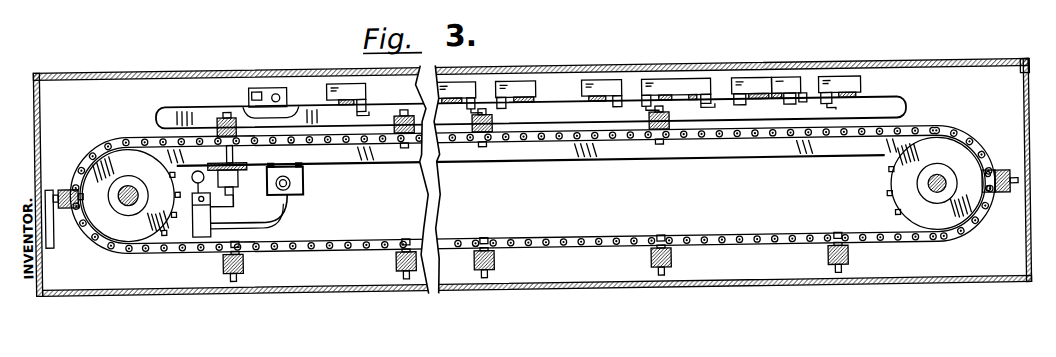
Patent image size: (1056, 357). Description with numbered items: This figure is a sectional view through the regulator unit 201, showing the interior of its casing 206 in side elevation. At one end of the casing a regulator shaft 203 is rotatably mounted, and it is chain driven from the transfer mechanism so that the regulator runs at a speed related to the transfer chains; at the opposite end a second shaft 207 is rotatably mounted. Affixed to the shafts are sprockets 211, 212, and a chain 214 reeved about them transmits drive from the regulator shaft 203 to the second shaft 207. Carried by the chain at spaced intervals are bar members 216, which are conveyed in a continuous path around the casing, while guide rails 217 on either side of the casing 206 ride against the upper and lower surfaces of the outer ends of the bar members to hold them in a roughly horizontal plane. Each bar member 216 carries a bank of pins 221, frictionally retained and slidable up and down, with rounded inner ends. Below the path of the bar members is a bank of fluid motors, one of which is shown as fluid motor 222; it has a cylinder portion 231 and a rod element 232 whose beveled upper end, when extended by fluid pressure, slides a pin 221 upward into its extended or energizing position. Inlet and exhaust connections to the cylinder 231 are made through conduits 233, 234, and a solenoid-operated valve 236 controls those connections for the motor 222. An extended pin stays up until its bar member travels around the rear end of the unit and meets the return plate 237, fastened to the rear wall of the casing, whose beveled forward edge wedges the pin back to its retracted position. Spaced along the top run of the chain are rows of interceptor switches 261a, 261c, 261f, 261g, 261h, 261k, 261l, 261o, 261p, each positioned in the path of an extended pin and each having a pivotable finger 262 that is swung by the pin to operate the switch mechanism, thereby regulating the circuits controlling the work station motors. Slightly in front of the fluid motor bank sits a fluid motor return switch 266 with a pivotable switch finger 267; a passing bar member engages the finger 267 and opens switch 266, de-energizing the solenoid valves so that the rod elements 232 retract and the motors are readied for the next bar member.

The regulator unit 201 is at (109, 70).
The regulator shaft 203 is at (957, 164).
The casing 206 is at (110, 287).
The second shaft 207 is at (132, 204).
The sprocket 211 is at (168, 229).
The sprocket 212 is at (893, 201).
The chain 214 is at (955, 133).
The bar member 216 is at (68, 167).
The guide rail 217 is at (161, 111).
The pin 221 is at (408, 146).
The fluid motor 222 is at (276, 214).
The cylinder portion 231 is at (221, 188).
The rod element 232 is at (234, 153).
The conduit 233 is at (211, 207).
The conduit 234 is at (177, 182).
The solenoid-operated valve 236 is at (212, 228).
The return plate 237 is at (62, 236).
The interceptor switch 261a is at (352, 75).
The interceptor switch 261c is at (462, 87).
The interceptor switch 261f is at (525, 85).
The interceptor switch 261g is at (597, 89).
The interceptor switch 261h is at (670, 90).
The interceptor switch 261k is at (705, 88).
The interceptor switch 261l is at (758, 87).
The interceptor switch 261o is at (785, 88).
The interceptor switch 261p is at (853, 89).
The pivotable finger 262 is at (363, 105).
The fluid motor return switch 266 is at (250, 96).
The pivotable switch finger 267 is at (297, 111).